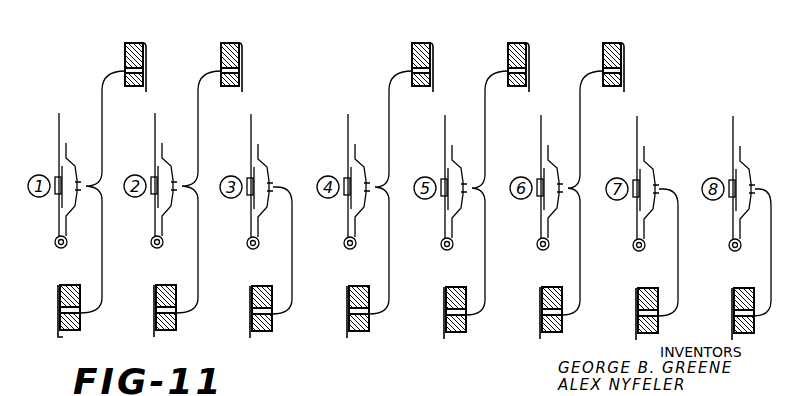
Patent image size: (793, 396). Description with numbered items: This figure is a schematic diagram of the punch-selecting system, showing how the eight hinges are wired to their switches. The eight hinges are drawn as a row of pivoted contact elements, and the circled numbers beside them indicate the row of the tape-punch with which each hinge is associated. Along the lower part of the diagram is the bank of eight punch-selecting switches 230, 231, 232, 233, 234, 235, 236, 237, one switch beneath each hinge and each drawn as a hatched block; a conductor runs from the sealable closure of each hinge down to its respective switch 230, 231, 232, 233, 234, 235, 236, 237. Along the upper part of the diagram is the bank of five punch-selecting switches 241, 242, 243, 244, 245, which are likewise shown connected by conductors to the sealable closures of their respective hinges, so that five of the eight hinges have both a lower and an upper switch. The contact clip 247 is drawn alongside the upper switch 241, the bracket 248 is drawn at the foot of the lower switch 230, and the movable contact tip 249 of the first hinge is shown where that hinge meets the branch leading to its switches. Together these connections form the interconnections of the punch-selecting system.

The punch-selecting switch 230 is at (81, 283).
The punch-selecting switch 231 is at (177, 283).
The punch-selecting switch 232 is at (272, 285).
The punch-selecting switch 233 is at (367, 285).
The punch-selecting switch 234 is at (463, 286).
The punch-selecting switch 235 is at (558, 287).
The punch-selecting switch 236 is at (656, 288).
The punch-selecting switch 237 is at (751, 288).
The punch-selecting switch 241 is at (129, 43).
The punch-selecting switch 242 is at (232, 43).
The punch-selecting switch 243 is at (433, 24).
The punch-selecting switch 244 is at (513, 43).
The punch-selecting switch 245 is at (616, 33).
The contact spring clip 247 is at (146, 62).
The mounting bracket 248 is at (75, 326).
The movable contact arm 249 is at (75, 182).